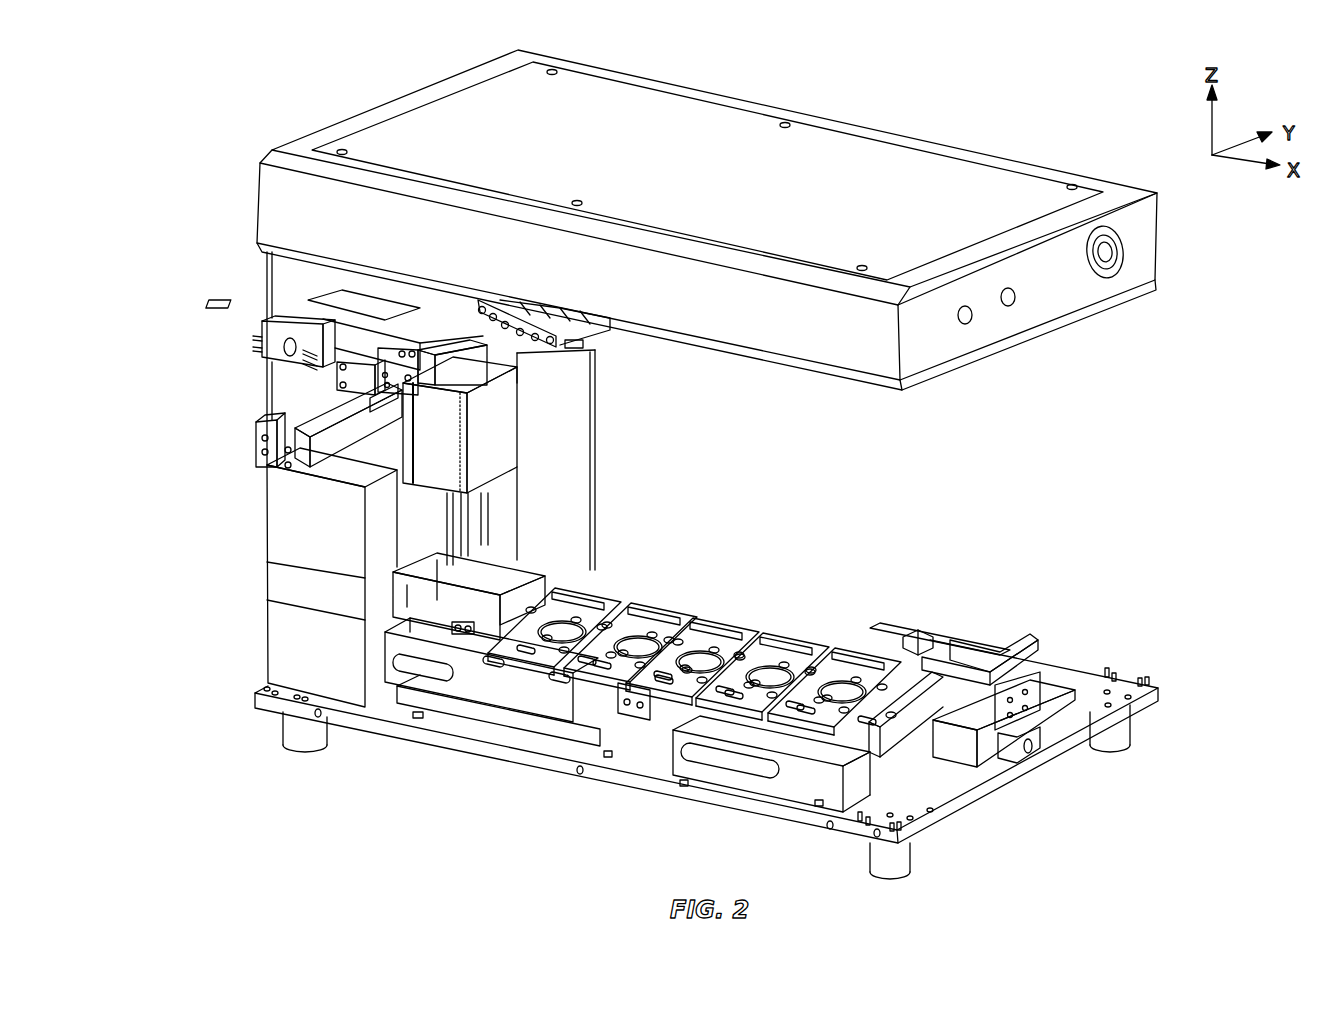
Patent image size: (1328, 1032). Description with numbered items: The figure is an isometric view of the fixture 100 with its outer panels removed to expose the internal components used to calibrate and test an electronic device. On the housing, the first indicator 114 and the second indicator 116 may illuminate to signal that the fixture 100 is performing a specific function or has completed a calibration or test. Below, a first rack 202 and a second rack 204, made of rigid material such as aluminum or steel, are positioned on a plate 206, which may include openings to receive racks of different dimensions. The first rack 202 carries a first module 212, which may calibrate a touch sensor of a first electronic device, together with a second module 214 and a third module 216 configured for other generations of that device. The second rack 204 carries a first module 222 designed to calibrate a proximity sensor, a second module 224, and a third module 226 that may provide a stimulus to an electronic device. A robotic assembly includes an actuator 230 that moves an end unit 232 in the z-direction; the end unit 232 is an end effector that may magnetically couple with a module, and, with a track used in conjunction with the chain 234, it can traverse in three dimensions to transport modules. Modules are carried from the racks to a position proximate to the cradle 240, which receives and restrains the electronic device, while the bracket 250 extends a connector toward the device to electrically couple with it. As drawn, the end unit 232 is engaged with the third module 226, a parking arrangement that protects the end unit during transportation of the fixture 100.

The fixture 100 is at (204, 134).
The first indicator 114 is at (972, 318).
The second indicator 116 is at (1015, 300).
The first rack 202 is at (800, 783).
The second rack 204 is at (585, 730).
The plate 206 is at (973, 798).
The first module 212 is at (708, 640).
The second module 214 is at (785, 657).
The third module 216 is at (845, 670).
The first module 222 is at (673, 623).
The second module 224 is at (613, 603).
The third module 226 is at (370, 633).
The actuator 230 is at (517, 405).
The end unit 232 is at (562, 565).
The chain 234 is at (612, 336).
The cradle 240 is at (898, 642).
The bracket 250 is at (958, 657).